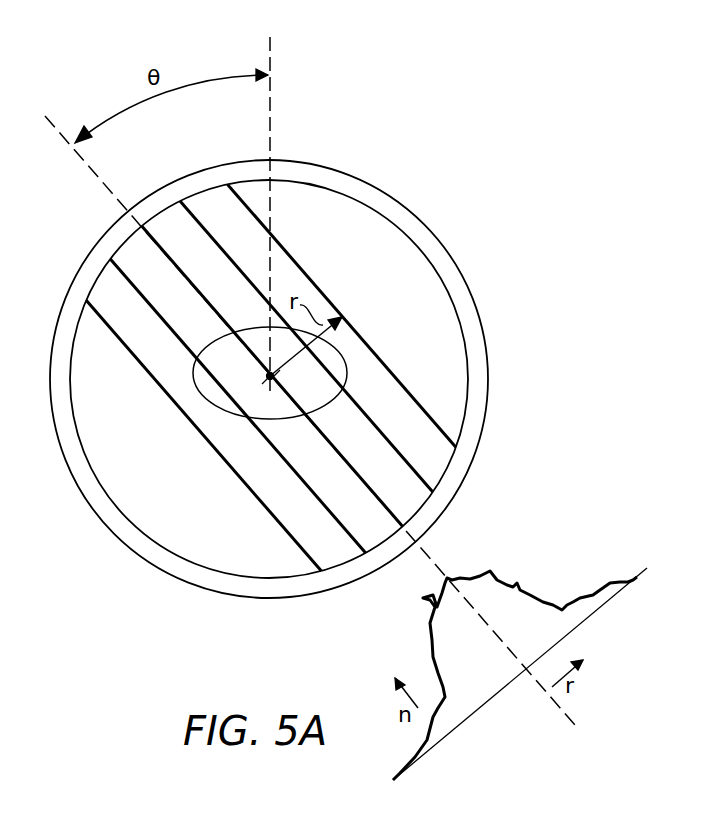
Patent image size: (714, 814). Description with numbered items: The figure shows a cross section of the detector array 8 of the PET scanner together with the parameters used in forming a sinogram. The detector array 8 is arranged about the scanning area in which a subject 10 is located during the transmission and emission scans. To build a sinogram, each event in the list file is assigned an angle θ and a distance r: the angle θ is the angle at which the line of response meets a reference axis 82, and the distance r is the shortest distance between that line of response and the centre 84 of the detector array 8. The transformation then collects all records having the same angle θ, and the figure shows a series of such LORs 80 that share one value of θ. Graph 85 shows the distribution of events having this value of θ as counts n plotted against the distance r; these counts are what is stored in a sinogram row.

The detector array 8 is at (385, 190).
The subject 10 is at (212, 403).
The LORs 80 is at (398, 380).
The reference axis 82 is at (271, 54).
The centre 84 is at (265, 375).
The graph 85 is at (625, 583).